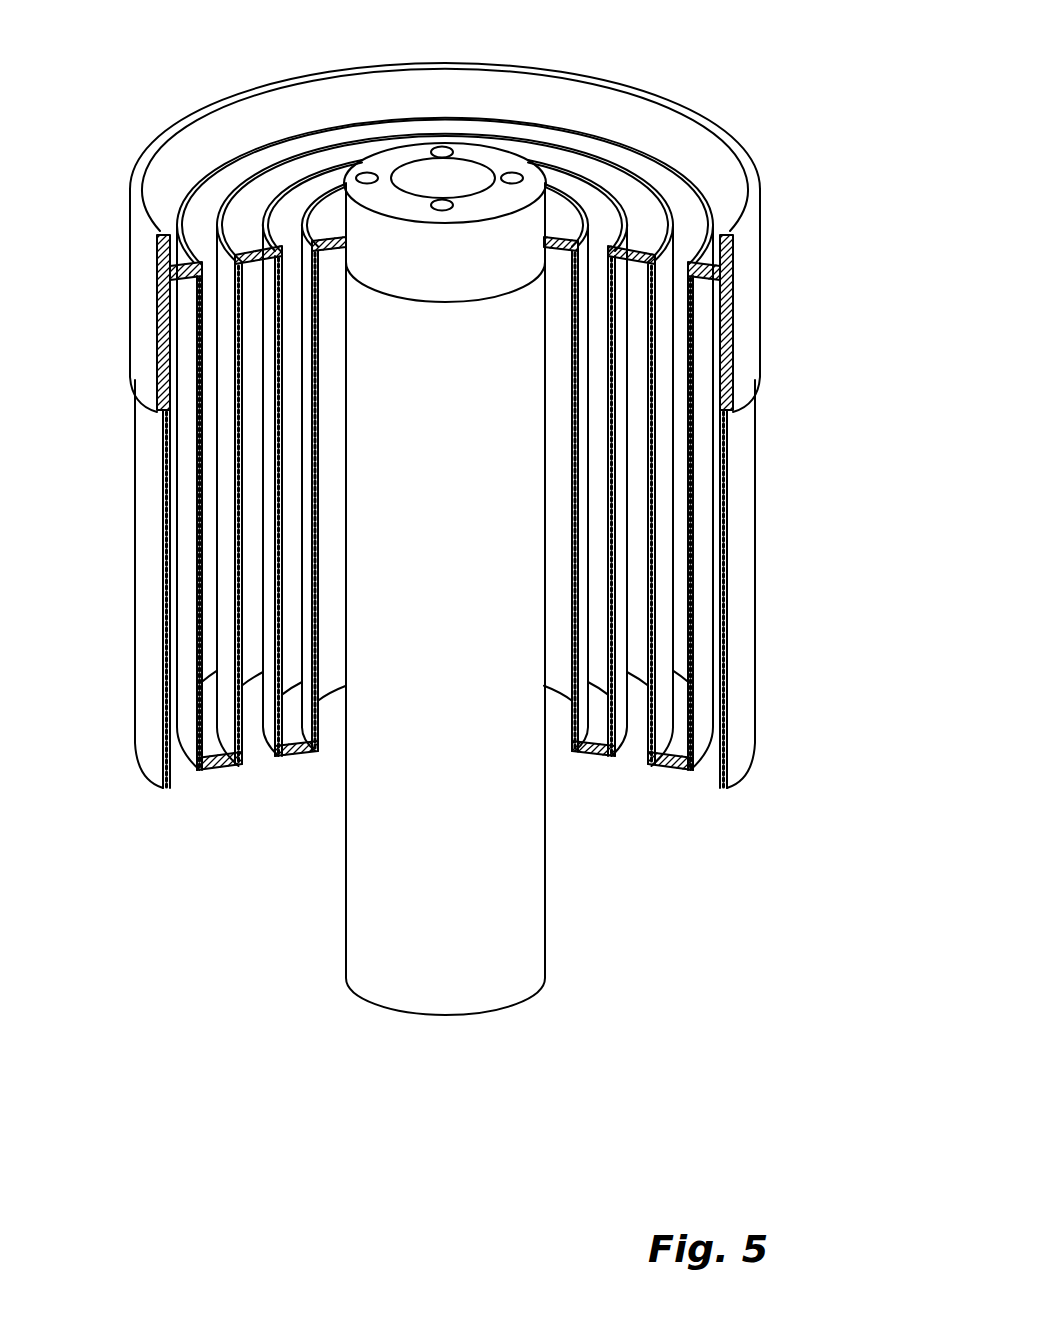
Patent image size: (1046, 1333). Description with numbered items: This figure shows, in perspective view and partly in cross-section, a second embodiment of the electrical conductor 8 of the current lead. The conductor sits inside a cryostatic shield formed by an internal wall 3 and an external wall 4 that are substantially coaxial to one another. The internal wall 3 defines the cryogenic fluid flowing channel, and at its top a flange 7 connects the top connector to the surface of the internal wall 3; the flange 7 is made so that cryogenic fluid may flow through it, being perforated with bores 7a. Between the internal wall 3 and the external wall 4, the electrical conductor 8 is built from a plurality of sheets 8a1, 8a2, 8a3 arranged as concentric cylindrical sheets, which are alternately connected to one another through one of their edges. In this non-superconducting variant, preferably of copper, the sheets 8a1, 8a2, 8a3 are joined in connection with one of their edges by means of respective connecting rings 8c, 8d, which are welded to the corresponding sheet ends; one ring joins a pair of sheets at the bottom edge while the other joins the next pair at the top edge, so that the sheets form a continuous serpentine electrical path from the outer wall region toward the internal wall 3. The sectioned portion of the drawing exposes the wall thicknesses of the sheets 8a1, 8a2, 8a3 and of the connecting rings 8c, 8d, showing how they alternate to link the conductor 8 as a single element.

The internal wall 3 is at (518, 942).
The external wall 4 is at (740, 442).
The flange 7 is at (500, 162).
The bores 7a is at (516, 177).
The electrical conductor 8 is at (262, 567).
The sheet 8a1 is at (690, 530).
The sheet 8a2 is at (650, 650).
The sheet 8a3 is at (610, 720).
The connecting ring 8c is at (218, 764).
The connecting ring 8d is at (224, 214).